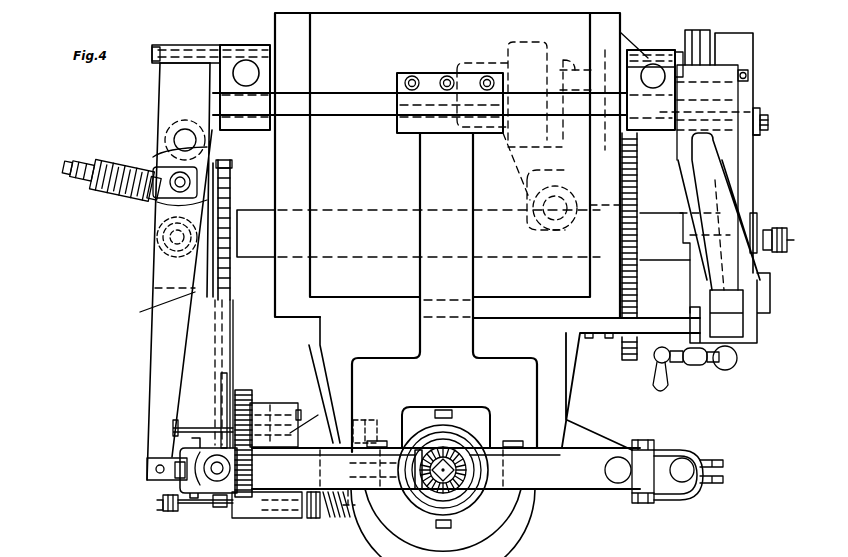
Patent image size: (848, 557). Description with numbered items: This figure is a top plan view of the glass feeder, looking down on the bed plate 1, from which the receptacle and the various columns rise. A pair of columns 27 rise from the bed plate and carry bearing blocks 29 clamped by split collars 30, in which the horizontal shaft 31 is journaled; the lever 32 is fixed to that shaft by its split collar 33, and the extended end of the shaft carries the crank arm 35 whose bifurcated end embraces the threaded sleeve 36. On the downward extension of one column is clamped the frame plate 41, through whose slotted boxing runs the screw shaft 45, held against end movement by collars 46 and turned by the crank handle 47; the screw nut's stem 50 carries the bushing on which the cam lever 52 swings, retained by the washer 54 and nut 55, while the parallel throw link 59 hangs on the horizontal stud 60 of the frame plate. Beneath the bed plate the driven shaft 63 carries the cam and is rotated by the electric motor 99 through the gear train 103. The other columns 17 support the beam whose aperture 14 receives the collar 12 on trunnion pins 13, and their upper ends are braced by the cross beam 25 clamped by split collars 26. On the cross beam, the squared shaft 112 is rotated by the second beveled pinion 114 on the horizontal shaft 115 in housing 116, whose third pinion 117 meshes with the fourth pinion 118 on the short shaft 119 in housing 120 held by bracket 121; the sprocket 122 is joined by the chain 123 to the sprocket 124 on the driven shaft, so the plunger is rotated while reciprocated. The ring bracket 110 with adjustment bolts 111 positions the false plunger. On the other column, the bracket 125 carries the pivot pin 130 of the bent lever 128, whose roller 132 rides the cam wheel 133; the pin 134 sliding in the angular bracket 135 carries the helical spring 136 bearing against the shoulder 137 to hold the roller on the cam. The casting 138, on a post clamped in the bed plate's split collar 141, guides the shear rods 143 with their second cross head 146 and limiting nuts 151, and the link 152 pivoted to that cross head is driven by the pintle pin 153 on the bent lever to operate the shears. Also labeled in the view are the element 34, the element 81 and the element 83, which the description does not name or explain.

The bed plate 1 is at (580, 385).
The collar 12 is at (432, 494).
The trunnion pins 13 is at (450, 410).
The circular aperture 14 is at (463, 500).
The columns 17 is at (309, 518).
The cross beam 25 is at (598, 470).
The split collars 26 is at (651, 450).
The columns 27 is at (449, 74).
The bearing blocks 29 is at (254, 132).
The split collars 30 is at (238, 45).
The shaft 31 is at (340, 93).
The lever 32 is at (444, 292).
The split collar 33 is at (424, 73).
The collar 34 is at (386, 492).
The crank arm 35 is at (682, 170).
The internally threaded sleeve 36 is at (740, 345).
The frame plate 41 is at (697, 38).
The screw shaft 45 is at (692, 268).
The collars 46 is at (692, 238).
The crank handle 47 is at (697, 366).
The cylindrical stem 50 is at (769, 123).
The cam lever 52 is at (754, 172).
The washer 54 is at (757, 135).
The nut 55 is at (768, 117).
The parallel throw link 59 is at (738, 98).
The horizontal stud 60 is at (749, 80).
The driven shaft 63 is at (256, 233).
The adjusting screw 81 is at (787, 249).
The lock nut 83 is at (781, 233).
The electric motor 99 is at (538, 127).
The gear train 103 is at (639, 299).
The ring bracket 110 is at (680, 450).
The adjustment bolts 111 is at (230, 505).
The squared shaft 112 is at (437, 495).
The second beveled pinion 114 is at (421, 433).
The horizontal shaft 115 is at (463, 457).
The housing 116 is at (446, 462).
The third pinion 117 is at (242, 518).
The fourth pinion 118 is at (249, 390).
The short shaft 119 is at (298, 405).
The housing 120 is at (310, 380).
The bracket 121 is at (275, 427).
The sprocket 122 is at (212, 402).
The chain 123 is at (236, 334).
The sprocket 124 is at (232, 174).
The bracket 125 is at (180, 271).
The bent lever 128 is at (150, 333).
The pivot pin 130 is at (173, 137).
The roller 132 is at (157, 241).
The cam wheel 133 is at (153, 305).
The pin 134 is at (78, 163).
The angular bracket 135 is at (125, 185).
The helical spring 136 is at (150, 160).
The shoulder 137 is at (148, 205).
The plate or casting 138 is at (249, 551).
The split collar 141 is at (722, 456).
The shear rods 143 is at (173, 428).
The second cross head 146 is at (336, 518).
The limiting nuts 151 is at (162, 505).
The link 152 is at (148, 458).
The pintle pin 153 is at (155, 470).